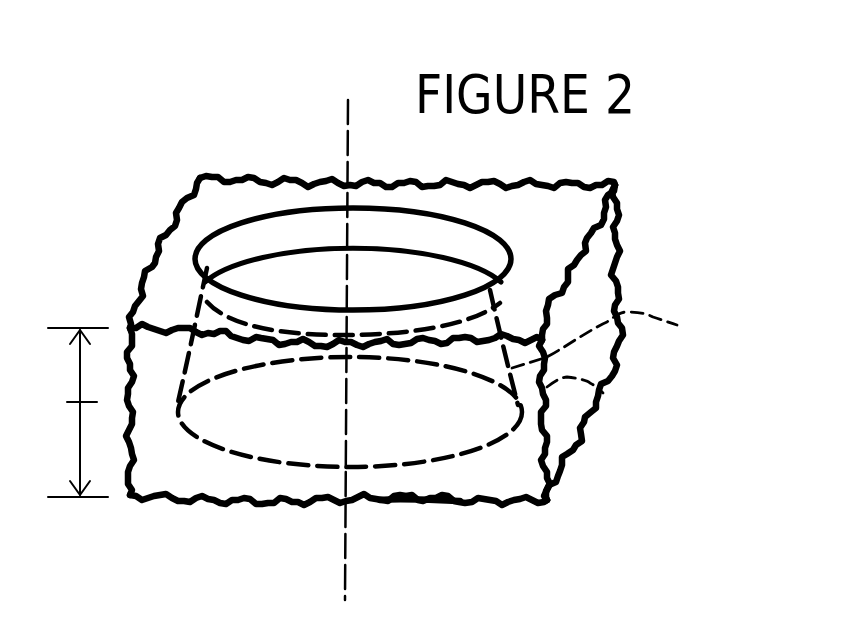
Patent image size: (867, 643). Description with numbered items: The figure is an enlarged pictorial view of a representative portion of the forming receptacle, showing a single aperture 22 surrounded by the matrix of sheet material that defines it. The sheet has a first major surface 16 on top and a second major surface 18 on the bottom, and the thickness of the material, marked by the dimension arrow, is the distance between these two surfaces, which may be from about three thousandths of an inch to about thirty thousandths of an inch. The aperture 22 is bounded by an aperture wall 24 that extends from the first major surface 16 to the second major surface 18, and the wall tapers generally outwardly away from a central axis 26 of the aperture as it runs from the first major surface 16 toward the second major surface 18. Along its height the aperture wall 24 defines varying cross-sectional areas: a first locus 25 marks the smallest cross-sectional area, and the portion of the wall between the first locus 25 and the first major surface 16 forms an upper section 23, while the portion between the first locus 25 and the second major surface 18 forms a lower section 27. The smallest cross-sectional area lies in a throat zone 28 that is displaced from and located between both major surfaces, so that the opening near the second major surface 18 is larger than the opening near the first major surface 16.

The first major surface 16 is at (547, 227).
The second major surface 18 is at (418, 500).
The aperture 22 is at (323, 285).
The upper section 23 is at (483, 255).
The aperture wall 24 is at (412, 277).
The first locus 25 is at (244, 260).
The central axis 26 is at (343, 408).
The lower section 27 is at (603, 393).
The throat zone 28 is at (626, 340).